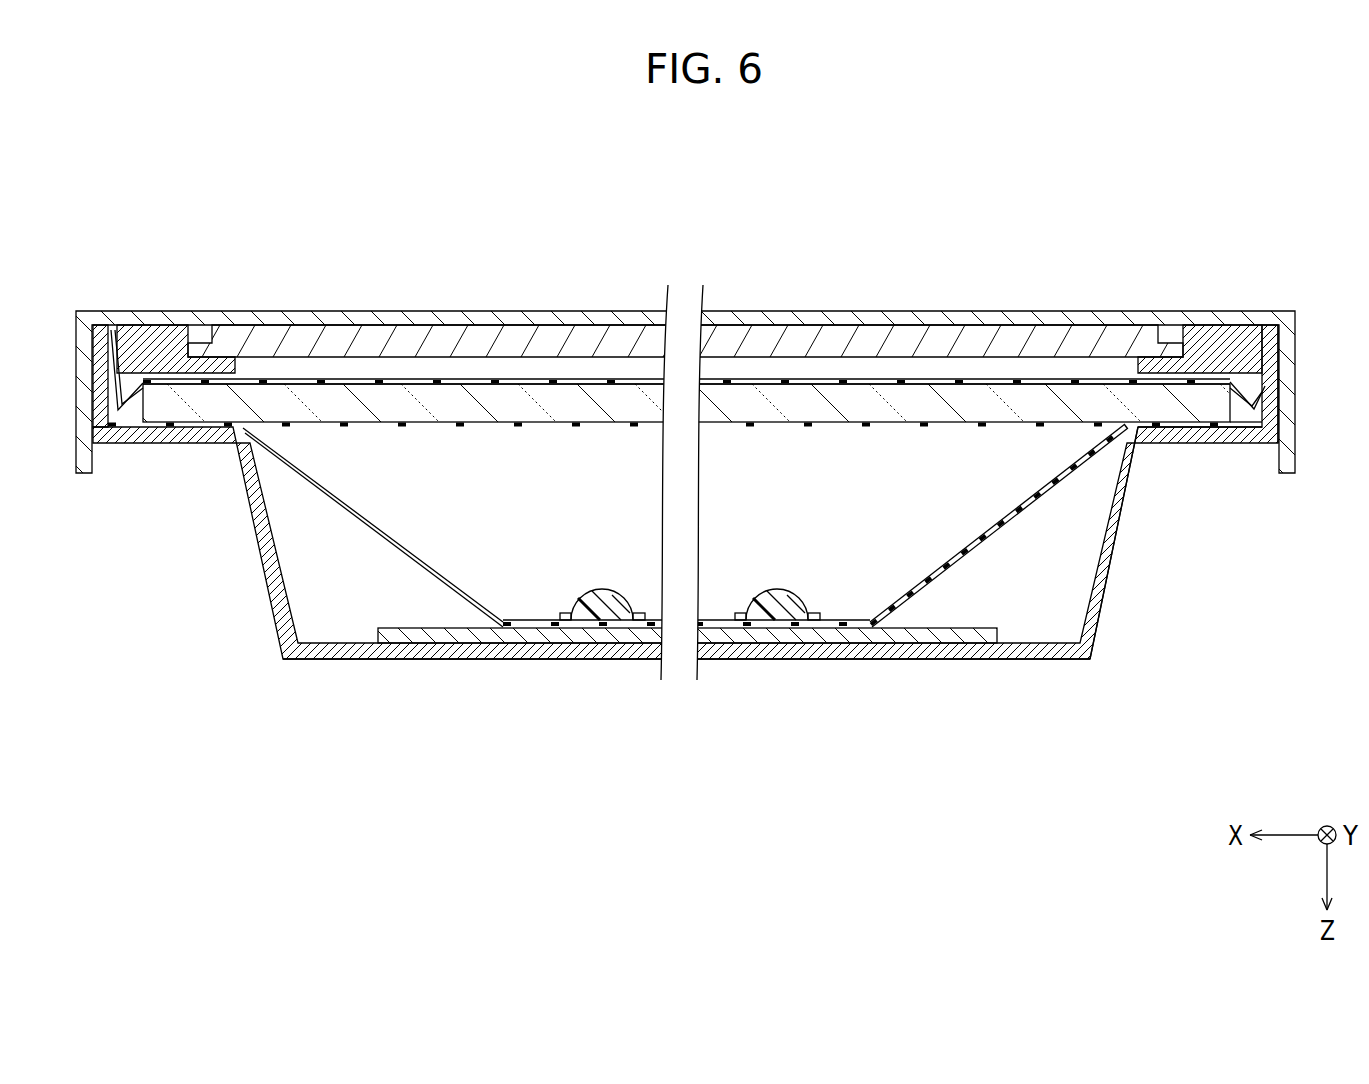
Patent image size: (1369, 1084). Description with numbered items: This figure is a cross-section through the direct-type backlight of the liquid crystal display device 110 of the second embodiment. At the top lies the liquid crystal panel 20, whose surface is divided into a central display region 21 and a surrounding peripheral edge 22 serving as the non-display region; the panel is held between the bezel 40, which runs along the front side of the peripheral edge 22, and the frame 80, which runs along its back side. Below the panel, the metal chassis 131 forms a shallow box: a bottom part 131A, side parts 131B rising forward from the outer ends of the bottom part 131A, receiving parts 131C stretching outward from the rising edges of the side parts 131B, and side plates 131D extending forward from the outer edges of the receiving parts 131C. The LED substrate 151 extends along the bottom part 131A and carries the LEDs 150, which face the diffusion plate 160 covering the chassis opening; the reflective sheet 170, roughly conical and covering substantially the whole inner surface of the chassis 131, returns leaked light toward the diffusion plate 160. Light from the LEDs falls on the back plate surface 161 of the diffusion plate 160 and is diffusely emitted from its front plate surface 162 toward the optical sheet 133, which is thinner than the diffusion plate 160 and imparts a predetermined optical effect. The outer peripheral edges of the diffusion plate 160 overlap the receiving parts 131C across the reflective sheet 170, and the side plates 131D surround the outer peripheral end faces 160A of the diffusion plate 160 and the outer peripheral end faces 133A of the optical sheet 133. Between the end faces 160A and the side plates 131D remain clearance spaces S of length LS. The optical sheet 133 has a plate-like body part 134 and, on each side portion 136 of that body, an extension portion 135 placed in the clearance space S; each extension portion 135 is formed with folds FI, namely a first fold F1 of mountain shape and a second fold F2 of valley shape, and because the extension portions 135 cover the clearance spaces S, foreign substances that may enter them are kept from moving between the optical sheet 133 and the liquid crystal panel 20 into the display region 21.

The backlight device 110 is at (671, 157).
The liquid crystal panel 20 is at (998, 335).
The display region 21 is at (287, 222).
The peripheral edge 22 is at (1177, 222).
The bezel 40 is at (1207, 320).
The frame 80 is at (1223, 350).
The chassis 131 is at (731, 500).
The bottom part 131A is at (1042, 655).
The side parts 131B is at (1106, 583).
The receiving parts 131C is at (1172, 433).
The side plates 131D is at (1265, 405).
The optical sheet 133 is at (490, 383).
The outer peripheral end faces of the optical sheet 133A is at (1265, 390).
The optical sheet 134 is at (421, 380).
The extension portions 135 is at (103, 402).
The frame 136 is at (146, 372).
The LED 150 is at (777, 612).
The LED substrate 151 is at (893, 633).
The diffusion plate 160 is at (573, 402).
The outer peripheral end faces of the diffusion plate 160A is at (1242, 393).
The back plate surface 161 is at (831, 420).
The front plate surface 162 is at (778, 384).
The reflective sheet 170 is at (947, 573).
The clearance spaces S is at (130, 413).
The length of the clearance space LS is at (144, 400).
The folds FI is at (158, 256).
The first fold F1 is at (119, 404).
The second fold F2 is at (117, 404).